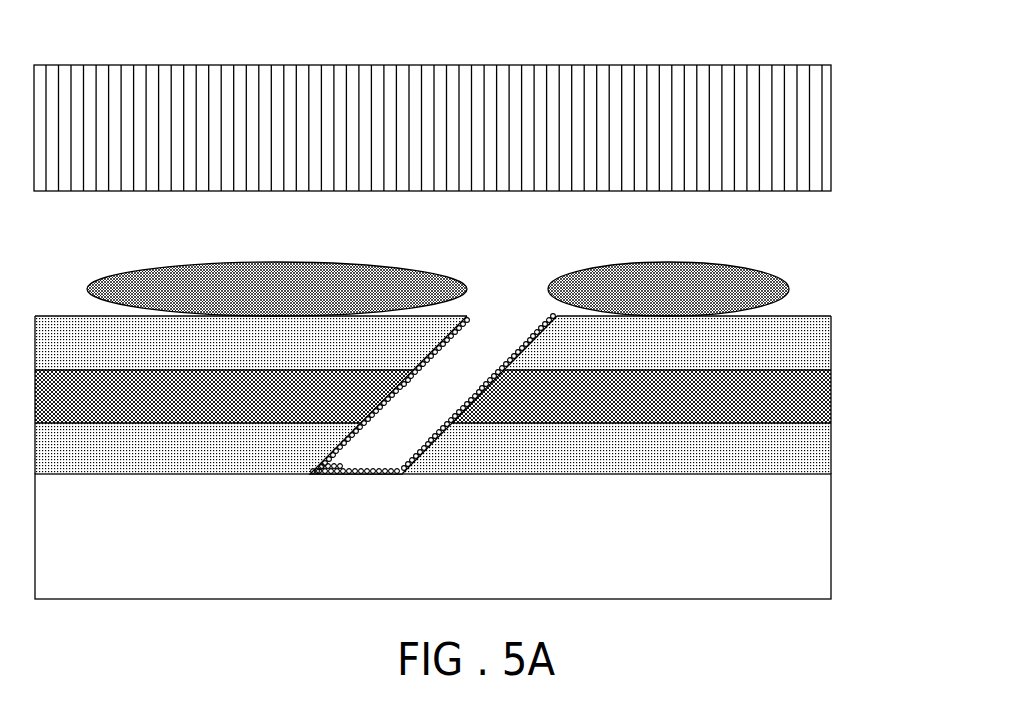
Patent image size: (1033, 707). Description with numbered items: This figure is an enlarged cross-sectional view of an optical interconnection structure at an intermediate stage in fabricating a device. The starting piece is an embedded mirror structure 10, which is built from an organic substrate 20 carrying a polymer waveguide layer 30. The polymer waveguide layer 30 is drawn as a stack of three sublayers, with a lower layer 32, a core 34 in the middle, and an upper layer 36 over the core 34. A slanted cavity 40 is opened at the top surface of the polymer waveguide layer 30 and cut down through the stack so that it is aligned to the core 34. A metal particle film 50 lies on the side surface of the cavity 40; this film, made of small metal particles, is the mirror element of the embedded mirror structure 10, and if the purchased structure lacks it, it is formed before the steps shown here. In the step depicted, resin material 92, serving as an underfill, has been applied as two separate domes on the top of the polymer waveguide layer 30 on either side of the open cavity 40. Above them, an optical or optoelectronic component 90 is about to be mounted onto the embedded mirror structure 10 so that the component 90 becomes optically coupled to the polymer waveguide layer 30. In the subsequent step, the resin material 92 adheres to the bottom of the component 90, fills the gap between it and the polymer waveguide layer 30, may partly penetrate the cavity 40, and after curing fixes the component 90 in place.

The embedded mirror structure 10 is at (486, 404).
The organic substrate 20 is at (446, 548).
The polymer waveguide layer 30 is at (486, 395).
The first dielectric layer 32 is at (788, 461).
The core 34 is at (790, 409).
The second dielectric layer 36 is at (790, 357).
The cavity 40 is at (448, 412).
The metal particle film 50 is at (449, 357).
The optical or optoelectronic component 90 is at (745, 65).
The resin material (underfill) 92 is at (587, 272).